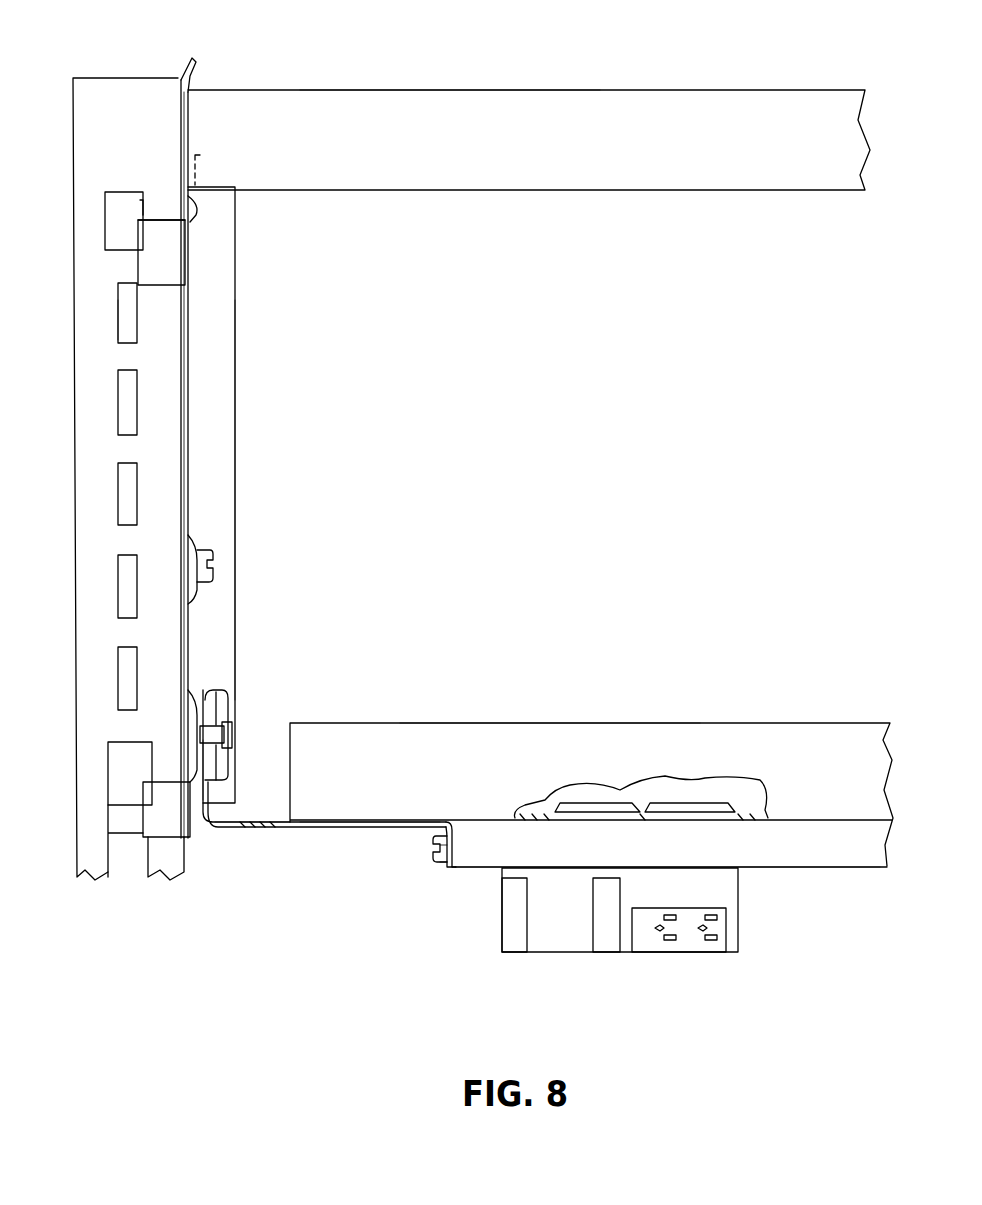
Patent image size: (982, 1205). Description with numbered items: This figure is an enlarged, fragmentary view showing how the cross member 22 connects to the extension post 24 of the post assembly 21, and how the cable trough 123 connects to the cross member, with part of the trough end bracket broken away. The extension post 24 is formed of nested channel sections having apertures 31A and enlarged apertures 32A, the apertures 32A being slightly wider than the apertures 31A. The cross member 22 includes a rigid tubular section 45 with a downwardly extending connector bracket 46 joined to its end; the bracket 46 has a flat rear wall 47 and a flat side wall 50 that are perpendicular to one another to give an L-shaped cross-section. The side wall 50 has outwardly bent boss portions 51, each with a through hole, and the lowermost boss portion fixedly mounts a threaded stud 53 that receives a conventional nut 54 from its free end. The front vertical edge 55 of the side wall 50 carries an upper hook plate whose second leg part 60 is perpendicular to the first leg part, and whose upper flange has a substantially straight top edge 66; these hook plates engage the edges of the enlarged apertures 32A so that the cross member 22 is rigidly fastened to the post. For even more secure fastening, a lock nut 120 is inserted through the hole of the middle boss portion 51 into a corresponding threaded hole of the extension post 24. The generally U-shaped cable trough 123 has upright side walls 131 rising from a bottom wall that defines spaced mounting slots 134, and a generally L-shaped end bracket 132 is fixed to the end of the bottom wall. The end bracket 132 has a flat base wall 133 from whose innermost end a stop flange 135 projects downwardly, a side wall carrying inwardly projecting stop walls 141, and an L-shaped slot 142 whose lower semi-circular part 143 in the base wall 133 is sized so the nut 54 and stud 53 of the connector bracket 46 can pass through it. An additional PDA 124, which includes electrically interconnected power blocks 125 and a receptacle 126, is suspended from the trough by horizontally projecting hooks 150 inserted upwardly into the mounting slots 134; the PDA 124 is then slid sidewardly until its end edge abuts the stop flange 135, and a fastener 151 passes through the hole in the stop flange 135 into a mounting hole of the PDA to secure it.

The post assembly 21 is at (75, 742).
The cross member 22 is at (434, 76).
The extension post 24 is at (78, 502).
The aperture 31A is at (119, 325).
The enlarged aperture 32A is at (105, 227).
The tubular section 45 is at (580, 108).
The connector bracket 46 is at (226, 446).
The rear wall 47 is at (218, 488).
The side wall 50 is at (192, 326).
The boss portion 51 is at (194, 212).
The threaded stud 53 is at (226, 740).
The nut 54 is at (211, 722).
The front vertical edge 55 is at (186, 412).
The second leg part 60 is at (161, 252).
The top edge 66 is at (142, 205).
The lock nut 120 is at (212, 557).
The cable trough 123 is at (518, 722).
The additional PDA 124 is at (578, 958).
The power block 125 is at (500, 920).
The receptacle 126 is at (694, 955).
The upright side wall 131 is at (788, 742).
The end bracket 132 is at (308, 838).
The base wall 133 is at (332, 838).
The mounting slot 134 is at (670, 822).
The stop flange 135 is at (440, 864).
The stop wall 141 is at (222, 782).
The slot 142 is at (205, 832).
The lower slot part 143 is at (226, 822).
The hook 150 is at (612, 806).
The fastener 151 is at (434, 846).